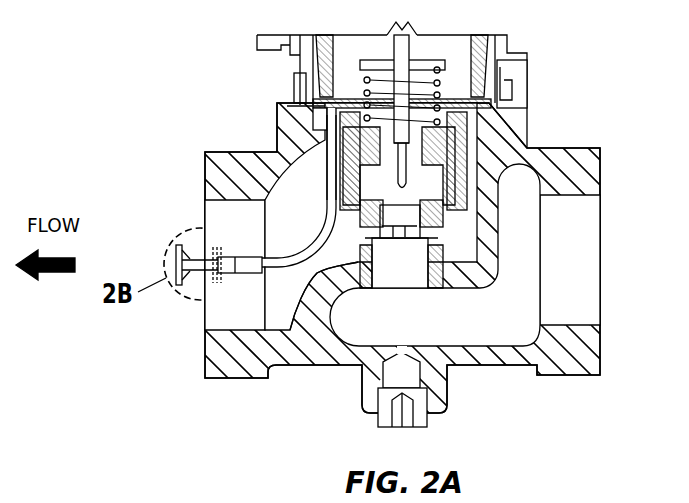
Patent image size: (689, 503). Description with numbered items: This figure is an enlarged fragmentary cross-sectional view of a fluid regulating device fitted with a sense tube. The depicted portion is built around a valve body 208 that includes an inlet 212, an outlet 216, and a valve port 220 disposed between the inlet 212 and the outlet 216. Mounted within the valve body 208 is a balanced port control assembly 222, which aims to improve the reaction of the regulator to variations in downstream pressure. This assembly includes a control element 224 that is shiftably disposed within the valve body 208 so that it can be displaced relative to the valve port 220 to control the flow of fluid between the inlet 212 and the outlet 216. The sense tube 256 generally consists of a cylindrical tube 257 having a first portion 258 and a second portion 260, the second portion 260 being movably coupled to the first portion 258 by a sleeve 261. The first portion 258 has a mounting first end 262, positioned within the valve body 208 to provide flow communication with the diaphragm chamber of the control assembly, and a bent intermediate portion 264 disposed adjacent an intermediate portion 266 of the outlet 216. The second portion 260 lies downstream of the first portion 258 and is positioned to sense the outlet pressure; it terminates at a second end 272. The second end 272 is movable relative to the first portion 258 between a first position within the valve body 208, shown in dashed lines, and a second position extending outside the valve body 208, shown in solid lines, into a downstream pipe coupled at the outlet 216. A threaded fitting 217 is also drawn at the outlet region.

The valve body 208 is at (182, 165).
The inlet 212 is at (588, 217).
The outlet 216 is at (213, 290).
The threaded fitting 217 is at (213, 310).
The valve port 220 is at (447, 248).
The balanced port control assembly 222 is at (458, 75).
The control element 224 is at (440, 221).
The sense tube 256 is at (281, 310).
The cylindrical tube 257 is at (346, 302).
The first portion 258 is at (306, 303).
The second portion 260 is at (200, 252).
The sleeve 261 is at (215, 245).
The first end 262 is at (322, 142).
The intermediate portion 264 is at (318, 242).
The intermediate portion of the outlet 266 is at (262, 312).
The second end 272 is at (174, 258).